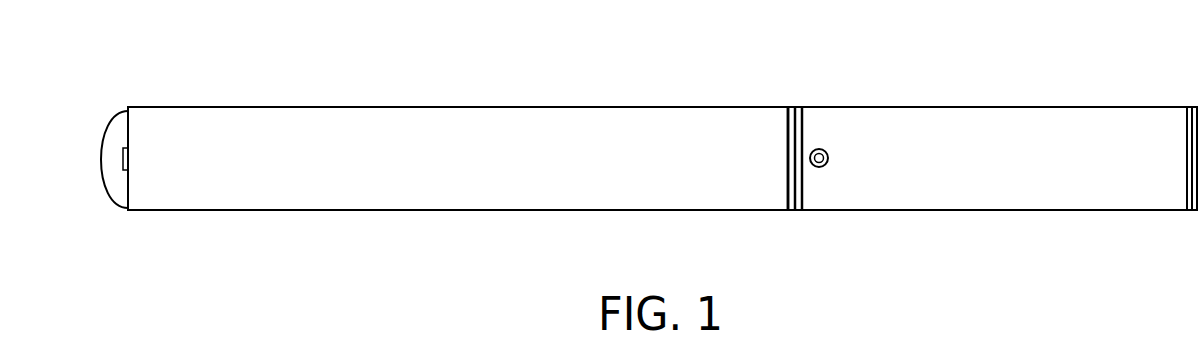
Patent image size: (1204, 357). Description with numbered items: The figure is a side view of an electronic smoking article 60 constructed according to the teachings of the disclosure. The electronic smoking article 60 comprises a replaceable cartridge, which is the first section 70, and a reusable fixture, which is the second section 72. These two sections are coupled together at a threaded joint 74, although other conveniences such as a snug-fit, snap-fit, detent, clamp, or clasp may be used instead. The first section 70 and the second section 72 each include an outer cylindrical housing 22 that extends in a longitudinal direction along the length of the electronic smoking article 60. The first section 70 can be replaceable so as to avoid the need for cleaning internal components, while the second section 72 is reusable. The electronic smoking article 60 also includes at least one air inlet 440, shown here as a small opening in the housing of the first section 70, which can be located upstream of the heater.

The electronic smoking article 60 is at (889, 88).
The outer cylindrical housing 22 is at (943, 135).
The second section 72 is at (730, 107).
The threaded joint 74 is at (794, 225).
The first section 70 is at (1032, 107).
The air inlet 440 is at (828, 159).